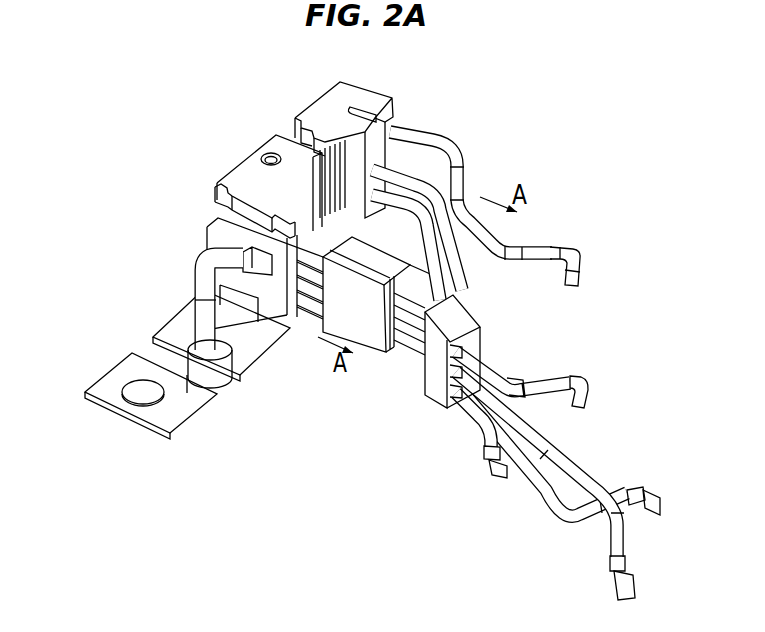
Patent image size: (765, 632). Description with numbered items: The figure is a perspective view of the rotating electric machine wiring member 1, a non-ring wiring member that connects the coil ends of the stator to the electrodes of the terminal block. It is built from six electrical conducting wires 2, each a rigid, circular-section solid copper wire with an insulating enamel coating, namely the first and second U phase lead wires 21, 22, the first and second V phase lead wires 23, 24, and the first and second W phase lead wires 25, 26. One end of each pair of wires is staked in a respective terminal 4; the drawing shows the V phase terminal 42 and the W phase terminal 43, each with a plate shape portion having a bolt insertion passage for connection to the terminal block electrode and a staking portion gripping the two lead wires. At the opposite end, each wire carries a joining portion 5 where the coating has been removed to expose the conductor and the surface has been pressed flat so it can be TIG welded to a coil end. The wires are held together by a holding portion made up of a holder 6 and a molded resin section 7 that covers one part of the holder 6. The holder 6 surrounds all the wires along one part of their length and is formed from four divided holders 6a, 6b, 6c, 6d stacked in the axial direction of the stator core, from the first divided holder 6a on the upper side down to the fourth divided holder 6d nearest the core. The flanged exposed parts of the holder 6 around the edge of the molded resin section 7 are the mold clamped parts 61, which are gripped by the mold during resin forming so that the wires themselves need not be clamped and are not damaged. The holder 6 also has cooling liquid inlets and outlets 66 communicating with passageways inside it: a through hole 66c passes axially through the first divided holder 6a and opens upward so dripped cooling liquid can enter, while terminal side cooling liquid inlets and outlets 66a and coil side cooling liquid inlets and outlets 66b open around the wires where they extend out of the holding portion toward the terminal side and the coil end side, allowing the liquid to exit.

The rotating electric machine wiring member 1 is at (188, 90).
The electrical conducting wire 2 is at (520, 360).
The terminal 4 is at (98, 417).
The joining portion 5 is at (633, 587).
The holder 6 is at (322, 304).
The first divided holder 6a is at (282, 310).
The second divided holder 6b is at (297, 310).
The third divided holder 6c is at (305, 305).
The fourth divided holder 6d is at (310, 303).
The molded resin section 7 is at (343, 85).
The first U phase lead wire 21 is at (513, 250).
The second U phase lead wire 22 is at (483, 423).
The first V phase lead wire 23 is at (448, 253).
The second V phase lead wire 24 is at (588, 485).
The first W phase lead wire 25 is at (433, 265).
The second W phase lead wire 26 is at (552, 505).
The V phase terminal 42 is at (172, 313).
The W phase terminal 43 is at (110, 373).
The mold clamped part 61 is at (362, 140).
The cooling liquid inlet and outlet 66 is at (263, 140).
The terminal side cooling liquid inlet and outlet 66a is at (243, 263).
The coil side cooling liquid inlet and outlet 66b is at (400, 134).
The through hole 66c is at (263, 147).